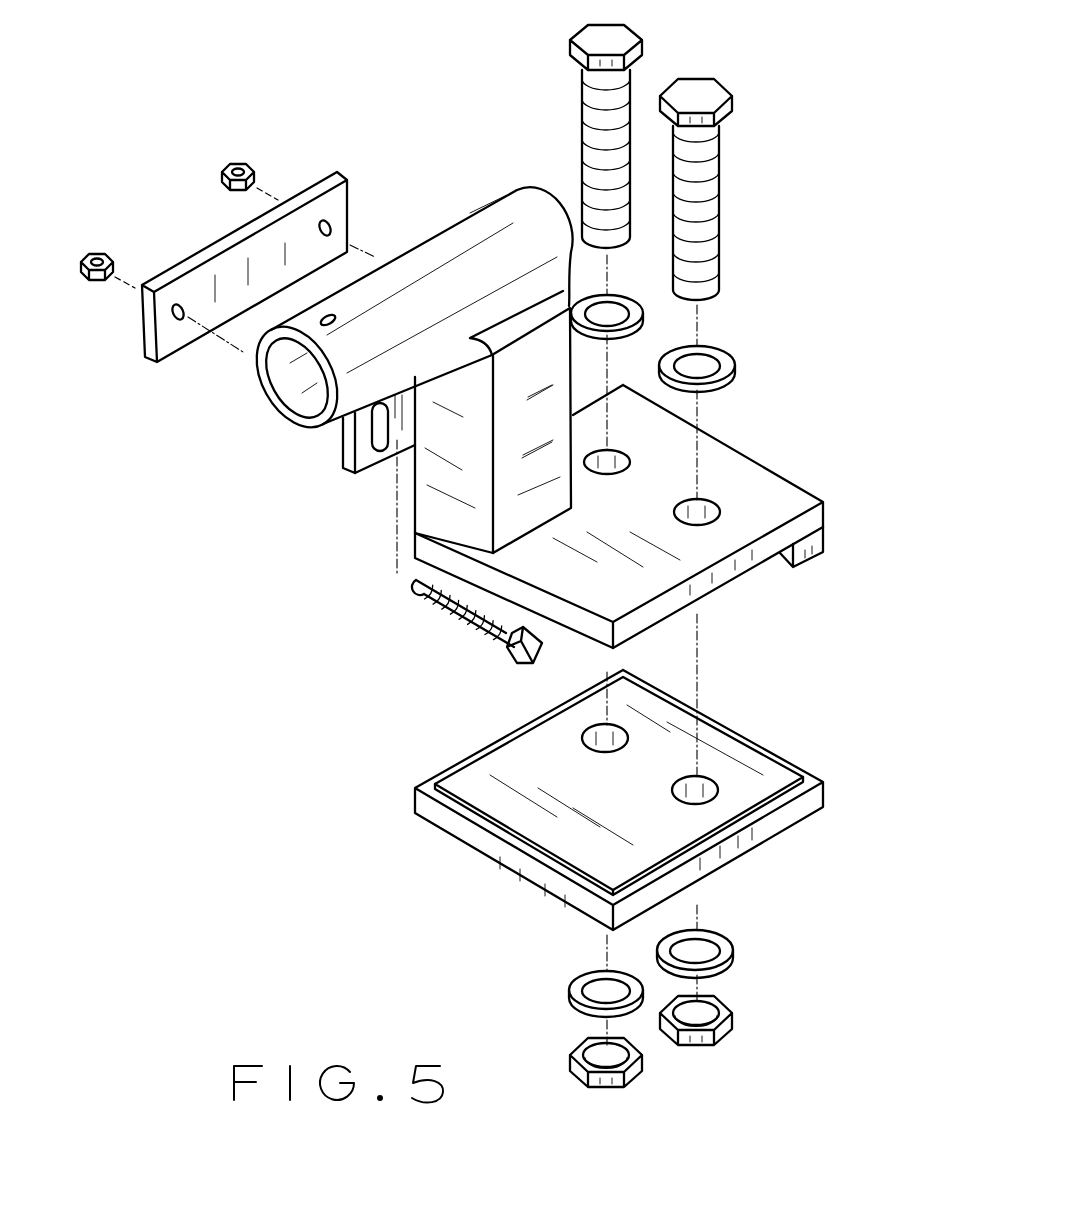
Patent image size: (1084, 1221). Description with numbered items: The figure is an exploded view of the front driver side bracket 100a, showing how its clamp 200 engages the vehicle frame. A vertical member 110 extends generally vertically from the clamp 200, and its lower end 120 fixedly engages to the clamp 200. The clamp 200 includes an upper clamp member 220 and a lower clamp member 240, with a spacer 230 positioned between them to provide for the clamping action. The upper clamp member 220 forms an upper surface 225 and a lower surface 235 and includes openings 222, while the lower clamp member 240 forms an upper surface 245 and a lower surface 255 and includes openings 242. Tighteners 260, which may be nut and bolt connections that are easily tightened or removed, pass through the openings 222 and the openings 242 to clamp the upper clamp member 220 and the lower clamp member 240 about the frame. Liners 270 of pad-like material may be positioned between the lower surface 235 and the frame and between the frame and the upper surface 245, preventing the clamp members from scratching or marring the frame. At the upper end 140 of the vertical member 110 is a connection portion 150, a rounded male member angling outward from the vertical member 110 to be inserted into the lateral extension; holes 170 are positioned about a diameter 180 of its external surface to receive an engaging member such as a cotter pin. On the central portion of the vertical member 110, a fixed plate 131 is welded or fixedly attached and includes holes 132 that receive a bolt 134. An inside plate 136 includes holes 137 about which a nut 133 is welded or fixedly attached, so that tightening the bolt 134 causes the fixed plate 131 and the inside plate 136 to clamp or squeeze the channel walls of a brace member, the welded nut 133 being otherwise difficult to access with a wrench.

The front driver side bracket 100a is at (503, 76).
The vertical member 110 is at (503, 440).
The lower end 120 is at (523, 522).
The fixed plate 131 is at (365, 457).
The holes 132 is at (385, 465).
The nut 133 is at (107, 247).
The bolt 134 is at (463, 627).
The inside plate 136 is at (308, 197).
The holes 137 is at (330, 224).
The upper end 140 is at (510, 365).
The connection portion 150 is at (497, 220).
The holes 170 is at (330, 317).
The diameter 180 is at (302, 418).
The clamp 200 is at (410, 703).
The upper clamp member 220 is at (723, 582).
The openings 222 is at (707, 510).
The upper surface 225 is at (770, 505).
The spacer 230 is at (827, 552).
The lower surface 235 is at (763, 565).
The lower clamp member 240 is at (753, 842).
The openings 242 is at (677, 792).
The upper surface 245 is at (787, 758).
The lower surface 255 is at (797, 828).
The tighteners 260 is at (618, 97).
The liners 270 is at (585, 843).